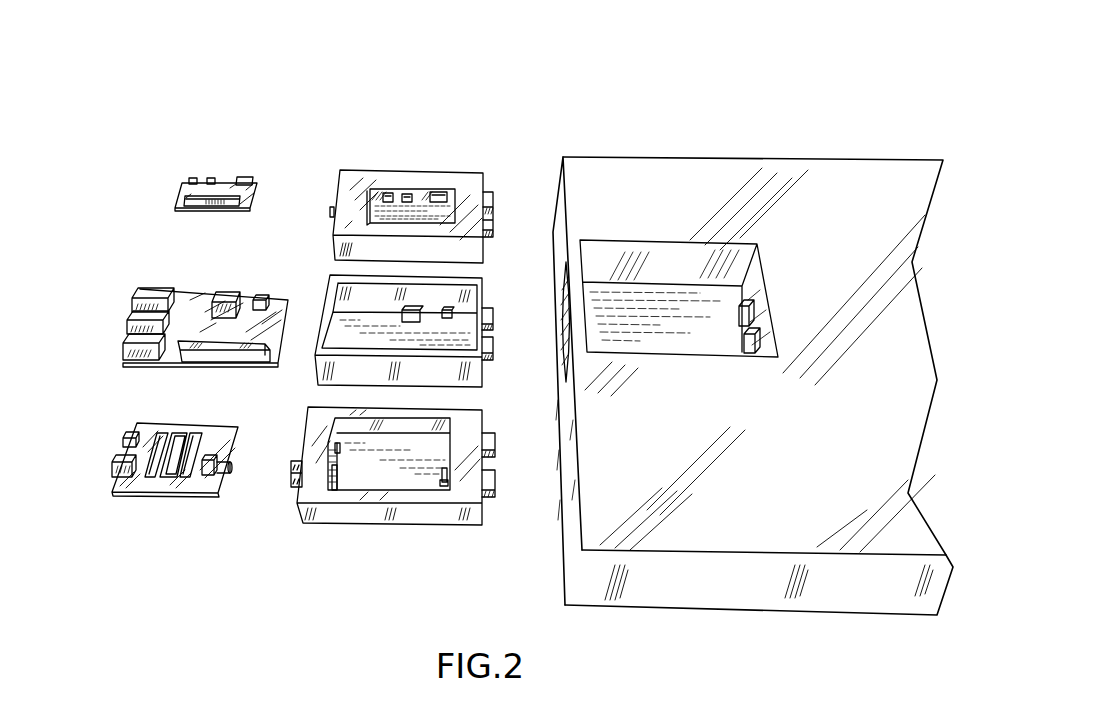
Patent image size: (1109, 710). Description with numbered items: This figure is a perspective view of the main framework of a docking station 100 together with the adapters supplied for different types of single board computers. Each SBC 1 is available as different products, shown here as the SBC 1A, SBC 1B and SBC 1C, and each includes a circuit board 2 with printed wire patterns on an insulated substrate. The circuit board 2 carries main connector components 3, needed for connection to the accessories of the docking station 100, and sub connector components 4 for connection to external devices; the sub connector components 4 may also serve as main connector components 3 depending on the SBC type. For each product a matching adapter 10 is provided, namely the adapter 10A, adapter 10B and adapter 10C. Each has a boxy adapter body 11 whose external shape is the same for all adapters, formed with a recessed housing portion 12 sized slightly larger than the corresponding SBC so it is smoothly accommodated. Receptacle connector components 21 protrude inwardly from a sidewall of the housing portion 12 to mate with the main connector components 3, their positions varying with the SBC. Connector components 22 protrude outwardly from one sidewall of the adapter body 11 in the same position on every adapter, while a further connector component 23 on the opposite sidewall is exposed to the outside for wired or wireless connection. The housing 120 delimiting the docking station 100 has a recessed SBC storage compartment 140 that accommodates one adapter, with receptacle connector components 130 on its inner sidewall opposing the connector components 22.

The single board computer 1 is at (222, 112).
The SBC of product A 1A is at (180, 178).
The SBC of product B 1B is at (134, 283).
The SBC of product C 1C is at (135, 418).
The circuit board 2 is at (180, 191).
The main connector component 3 is at (241, 180).
The sub connector component 4 is at (229, 203).
The adapter 10 is at (468, 132).
The adapter for product A 10A is at (476, 166).
The adapter for product B 10B is at (456, 270).
The adapter for product C 10C is at (412, 535).
The adapter body 11 is at (368, 180).
The housing portion 12 is at (458, 198).
The receptacle connector component 21 is at (440, 192).
The connector component 22 is at (492, 227).
The connector component 23 is at (330, 213).
The docking station 100 is at (864, 155).
The housing 120 is at (767, 587).
The receptacle connector component 130 is at (782, 343).
The SBC storage compartment 140 is at (638, 250).